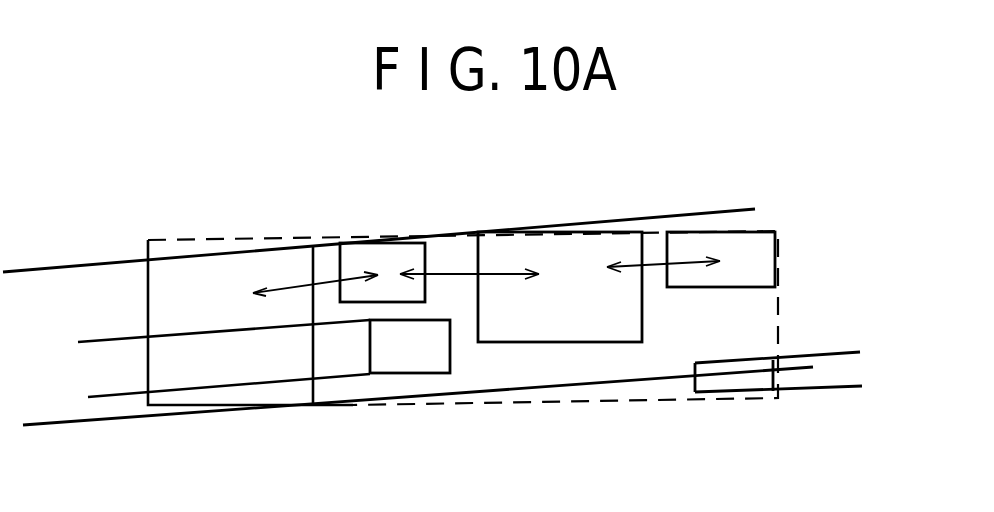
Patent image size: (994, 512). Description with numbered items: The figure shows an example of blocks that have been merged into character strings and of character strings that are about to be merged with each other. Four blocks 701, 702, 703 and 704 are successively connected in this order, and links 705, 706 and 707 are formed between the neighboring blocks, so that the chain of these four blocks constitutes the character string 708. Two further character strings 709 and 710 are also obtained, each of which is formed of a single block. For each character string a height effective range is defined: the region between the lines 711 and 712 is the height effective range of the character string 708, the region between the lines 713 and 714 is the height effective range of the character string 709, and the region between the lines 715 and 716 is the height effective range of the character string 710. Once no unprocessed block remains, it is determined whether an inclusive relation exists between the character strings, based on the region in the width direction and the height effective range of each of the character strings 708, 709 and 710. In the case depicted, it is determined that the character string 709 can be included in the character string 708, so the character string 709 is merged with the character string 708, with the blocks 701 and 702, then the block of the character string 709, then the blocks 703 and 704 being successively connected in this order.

The block 701 is at (258, 266).
The block 702 is at (388, 258).
The block 703 is at (548, 241).
The block 704 is at (757, 247).
The link 705 is at (303, 287).
The link 706 is at (457, 268).
The link 707 is at (653, 262).
The character string 708 is at (157, 239).
The character string 709 is at (420, 360).
The character string 710 is at (735, 383).
The line 711 is at (48, 268).
The line 712 is at (76, 422).
The line 713 is at (90, 341).
The line 714 is at (93, 396).
The line 715 is at (823, 356).
The line 716 is at (823, 393).